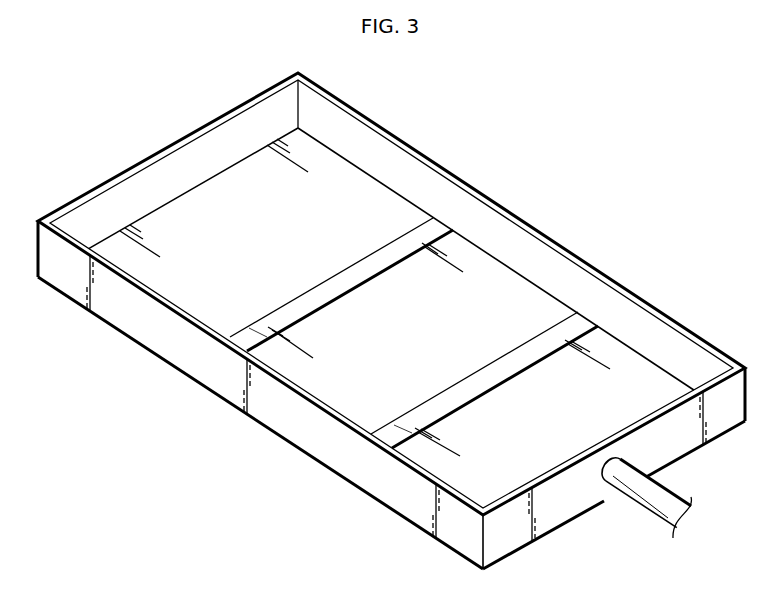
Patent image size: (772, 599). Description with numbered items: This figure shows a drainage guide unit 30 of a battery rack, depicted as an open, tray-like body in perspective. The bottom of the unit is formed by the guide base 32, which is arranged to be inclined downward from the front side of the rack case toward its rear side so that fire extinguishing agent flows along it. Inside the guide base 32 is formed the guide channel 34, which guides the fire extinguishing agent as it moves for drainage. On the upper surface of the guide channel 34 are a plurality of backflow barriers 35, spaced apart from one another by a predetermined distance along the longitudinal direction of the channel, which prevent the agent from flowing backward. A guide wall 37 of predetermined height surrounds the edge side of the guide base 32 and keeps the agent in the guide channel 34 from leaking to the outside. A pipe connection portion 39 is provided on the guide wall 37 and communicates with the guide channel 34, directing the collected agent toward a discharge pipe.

The drainage guide unit 30 is at (543, 152).
The guide base 32 is at (278, 435).
The guide channel 34 is at (362, 197).
The backflow barrier 35 is at (551, 322).
The guide wall 37 is at (206, 365).
The pipe connection portion 39 is at (659, 490).